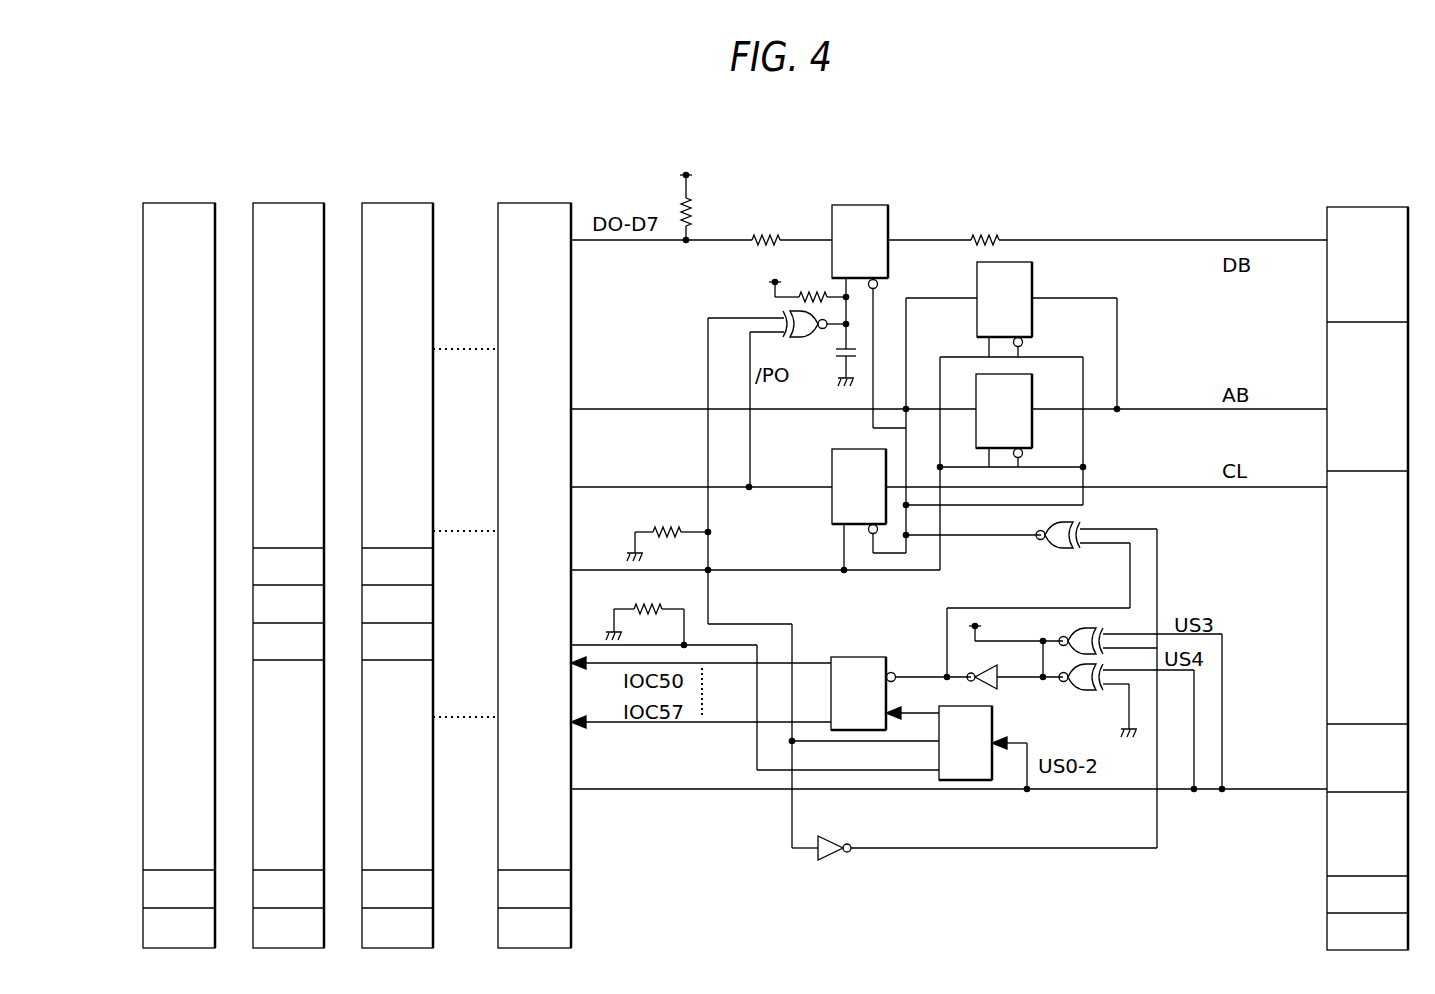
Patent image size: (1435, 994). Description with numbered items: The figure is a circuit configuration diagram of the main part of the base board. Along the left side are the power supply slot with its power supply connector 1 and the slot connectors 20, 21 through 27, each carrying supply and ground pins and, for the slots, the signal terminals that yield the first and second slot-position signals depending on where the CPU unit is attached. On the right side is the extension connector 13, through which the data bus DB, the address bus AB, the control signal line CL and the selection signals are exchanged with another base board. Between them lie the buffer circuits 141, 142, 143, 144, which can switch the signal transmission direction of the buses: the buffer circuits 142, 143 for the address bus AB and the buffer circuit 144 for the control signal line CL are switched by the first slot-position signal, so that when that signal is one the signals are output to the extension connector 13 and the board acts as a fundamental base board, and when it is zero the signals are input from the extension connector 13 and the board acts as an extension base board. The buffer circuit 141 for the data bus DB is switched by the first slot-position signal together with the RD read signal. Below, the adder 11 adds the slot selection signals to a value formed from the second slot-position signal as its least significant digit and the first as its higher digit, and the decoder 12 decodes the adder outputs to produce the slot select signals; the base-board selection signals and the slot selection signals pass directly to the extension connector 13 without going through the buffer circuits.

The power supply connector 1 is at (178, 202).
The connector 20 is at (288, 202).
The connector 21 is at (397, 202).
The connector 27 is at (534, 202).
The extension connector 13 is at (1367, 206).
The buffer circuit 141 is at (861, 205).
The buffer circuit 142 is at (1032, 276).
The buffer circuit 143 is at (1032, 388).
The buffer circuit 144 is at (832, 459).
The decoder 12 is at (857, 657).
The adder 11 is at (992, 719).